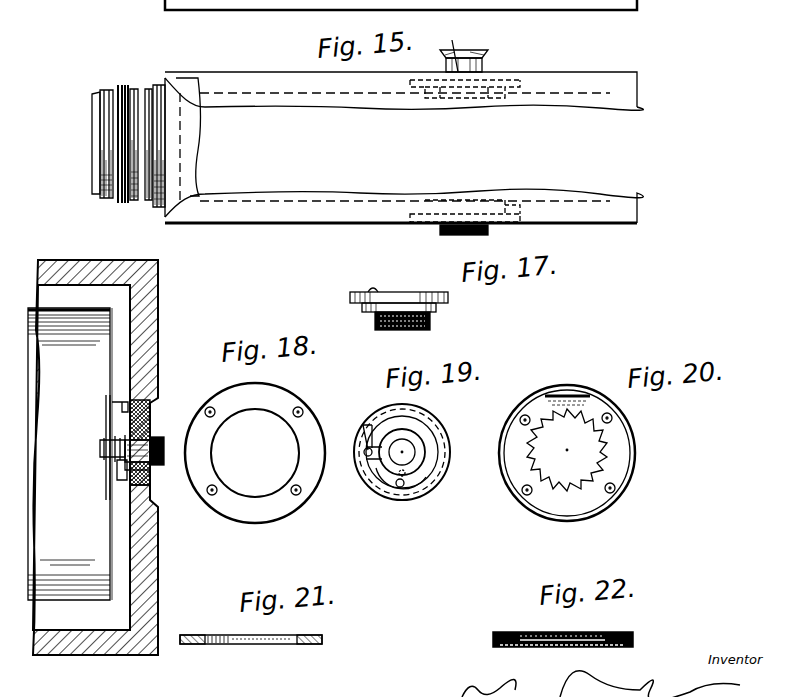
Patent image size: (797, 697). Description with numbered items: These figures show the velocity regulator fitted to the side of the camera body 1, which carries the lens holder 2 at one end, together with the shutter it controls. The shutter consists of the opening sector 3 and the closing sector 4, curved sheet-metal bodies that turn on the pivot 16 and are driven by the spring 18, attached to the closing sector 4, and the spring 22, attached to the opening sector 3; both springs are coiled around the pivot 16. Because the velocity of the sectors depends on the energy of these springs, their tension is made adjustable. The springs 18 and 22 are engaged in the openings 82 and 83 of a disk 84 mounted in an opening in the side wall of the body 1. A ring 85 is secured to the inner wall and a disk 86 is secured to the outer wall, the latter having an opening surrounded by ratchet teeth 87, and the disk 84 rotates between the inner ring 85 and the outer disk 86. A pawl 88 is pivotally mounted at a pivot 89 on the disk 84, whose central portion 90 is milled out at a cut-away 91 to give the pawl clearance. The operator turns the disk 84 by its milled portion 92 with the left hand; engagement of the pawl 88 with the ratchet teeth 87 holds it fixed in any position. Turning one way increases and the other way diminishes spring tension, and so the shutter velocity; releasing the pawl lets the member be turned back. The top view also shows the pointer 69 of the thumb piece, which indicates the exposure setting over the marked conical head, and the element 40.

In FIG. 15, the camera body 1 is at (580, 85).
In FIG. 16, the camera body 1 is at (150, 320).
In FIG. 15, the lens holder 2 is at (115, 90).
In FIG. 16, the opening sector 3 is at (70, 454).
In FIG. 16, the closing sector 4 is at (69, 561).
In FIG. 15, the pivot 16 is at (465, 0).
In FIG. 16, the pivot 16 is at (150, 425).
In FIG. 16, the spring 18 is at (126, 480).
In FIG. 16, the spring 22 is at (115, 410).
In FIG. 15, the switch button 40 is at (488, 50).
In FIG. 15, the pointer 69 is at (454, 45).
In FIG. 19, the opening 82 is at (400, 489).
In FIG. 19, the opening 83 is at (428, 494).
In FIG. 17, the disk 84 is at (413, 297).
In FIG. 19, the disk 84 is at (440, 436).
In FIG. 15, the ring 85 is at (502, 202).
In FIG. 16, the ring 85 is at (152, 392).
In FIG. 18, the ring 85 is at (218, 398).
In FIG. 21, the ring 85 is at (306, 645).
In FIG. 15, the disk 86 is at (507, 226).
In FIG. 16, the disk 86 is at (150, 492).
In FIG. 20, the disk 86 is at (569, 395).
In FIG. 22, the disk 86 is at (512, 632).
In FIG. 16, the ratchet teeth 87 is at (150, 475).
In FIG. 20, the ratchet teeth 87 is at (607, 455).
In FIG. 22, the ratchet teeth 87 is at (537, 648).
In FIG. 17, the pawl 88 is at (365, 311).
In FIG. 19, the pawl 88 is at (363, 428).
In FIG. 17, the pivot 89 is at (374, 289).
In FIG. 19, the pivot 89 is at (365, 456).
In FIG. 19, the central portion 90 is at (430, 472).
In FIG. 19, the cut-away 91 is at (378, 468).
In FIG. 15, the milled portion 92 is at (450, 236).
In FIG. 16, the milled portion 92 is at (160, 462).
In FIG. 17, the milled portion 92 is at (418, 332).
In FIG. 19, the milled portion 92 is at (416, 456).